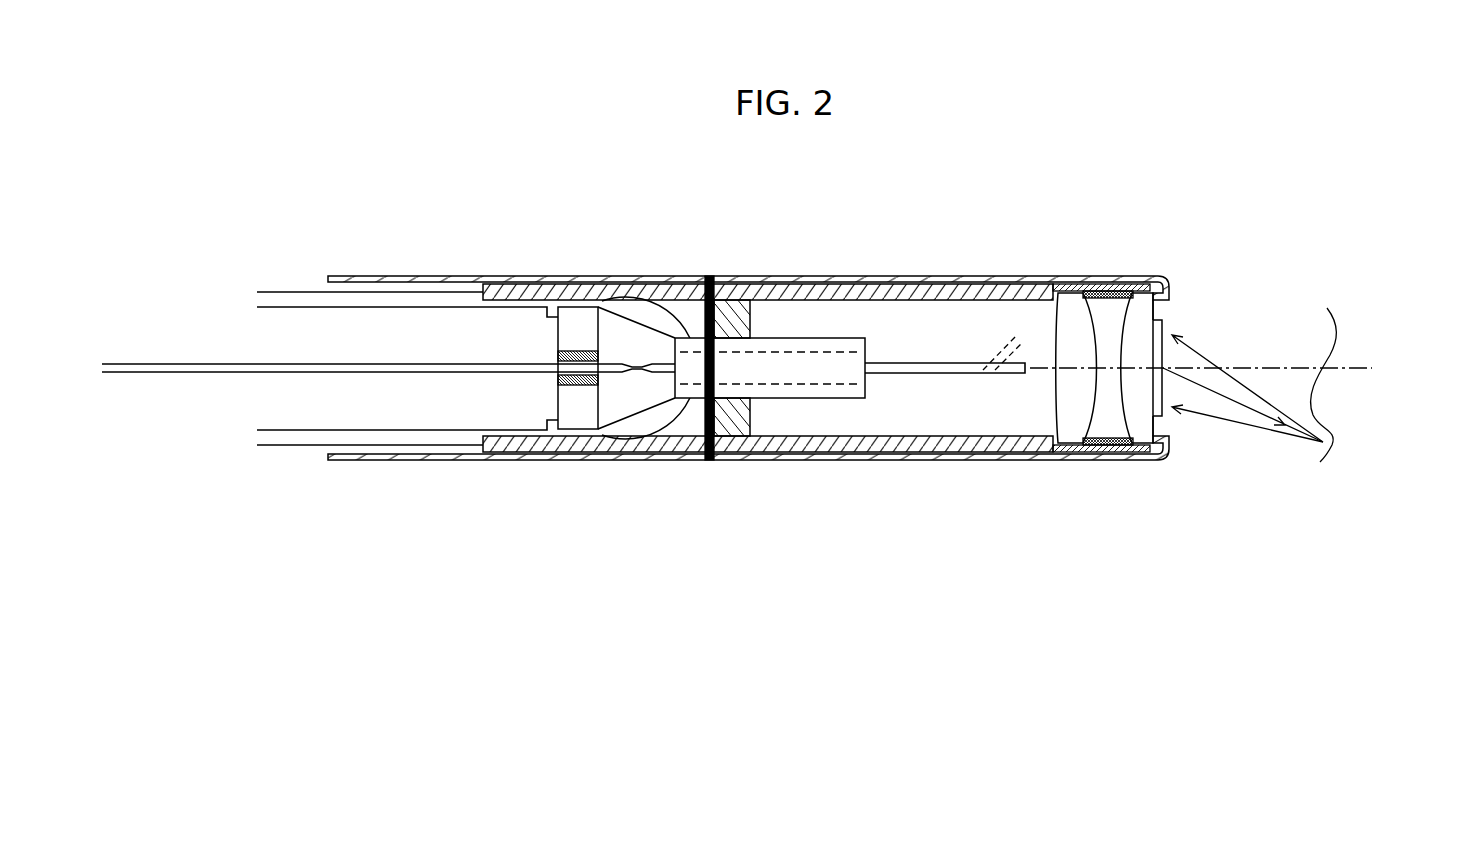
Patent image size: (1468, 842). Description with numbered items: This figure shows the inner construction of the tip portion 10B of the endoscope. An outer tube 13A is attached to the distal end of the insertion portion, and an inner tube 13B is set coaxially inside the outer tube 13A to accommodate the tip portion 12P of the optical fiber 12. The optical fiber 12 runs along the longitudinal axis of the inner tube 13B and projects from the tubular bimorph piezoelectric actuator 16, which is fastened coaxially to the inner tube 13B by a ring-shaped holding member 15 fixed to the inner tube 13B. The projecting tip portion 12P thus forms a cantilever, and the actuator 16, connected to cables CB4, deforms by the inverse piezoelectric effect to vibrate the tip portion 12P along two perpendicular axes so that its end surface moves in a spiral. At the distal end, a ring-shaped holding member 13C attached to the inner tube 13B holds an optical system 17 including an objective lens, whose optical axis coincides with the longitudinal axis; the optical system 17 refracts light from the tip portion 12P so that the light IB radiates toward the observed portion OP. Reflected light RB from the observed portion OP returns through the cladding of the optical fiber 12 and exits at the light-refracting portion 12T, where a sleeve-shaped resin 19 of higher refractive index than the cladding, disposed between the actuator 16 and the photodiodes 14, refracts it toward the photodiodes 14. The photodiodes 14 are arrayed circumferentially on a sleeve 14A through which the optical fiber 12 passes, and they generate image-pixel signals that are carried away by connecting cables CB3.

The tip portion 10B is at (748, 308).
The optical fiber 12 is at (170, 364).
The light-refracting portion 12T is at (627, 394).
The tip portion of the optical fiber 12P is at (942, 373).
The outer tube 13A is at (820, 276).
The inner tube 13B is at (995, 285).
The ring-shaped holding member 13C is at (1108, 286).
The photodiodes 14 is at (542, 369).
The sleeve 14A is at (558, 377).
The ring-shaped holding member 15 is at (735, 310).
The piezoelectric actuator 16 is at (807, 398).
The optical system 17 is at (1163, 325).
The sleeve-shaped resin 19 is at (636, 344).
The connecting cables CB3 is at (310, 308).
The cables CB4 is at (287, 291).
The light IB is at (1242, 400).
The reflected light RB is at (1247, 426).
The observed portion OP is at (1335, 442).